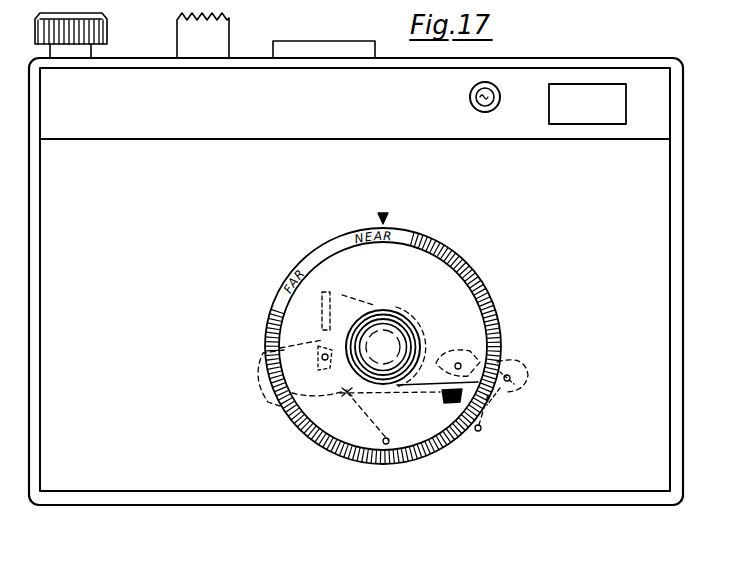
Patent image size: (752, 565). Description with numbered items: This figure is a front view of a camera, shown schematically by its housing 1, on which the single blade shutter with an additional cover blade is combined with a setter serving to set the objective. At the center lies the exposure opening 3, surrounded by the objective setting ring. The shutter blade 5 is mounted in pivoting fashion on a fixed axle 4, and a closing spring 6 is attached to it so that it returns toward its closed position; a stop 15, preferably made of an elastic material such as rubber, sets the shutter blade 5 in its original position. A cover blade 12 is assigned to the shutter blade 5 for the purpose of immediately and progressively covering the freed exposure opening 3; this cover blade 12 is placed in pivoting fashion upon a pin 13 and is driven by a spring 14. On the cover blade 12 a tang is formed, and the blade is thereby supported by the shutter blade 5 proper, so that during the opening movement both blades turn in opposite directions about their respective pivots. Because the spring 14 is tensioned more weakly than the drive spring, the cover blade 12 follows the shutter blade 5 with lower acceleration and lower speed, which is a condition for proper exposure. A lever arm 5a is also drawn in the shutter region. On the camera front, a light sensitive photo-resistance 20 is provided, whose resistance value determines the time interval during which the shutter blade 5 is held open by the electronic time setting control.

The housing 1 is at (611, 485).
The exposure opening 3 is at (395, 343).
The fixed axle 4 is at (322, 363).
The shutter blade 5 is at (362, 307).
The lever arm 5a is at (334, 296).
The closing spring 6 is at (366, 417).
The cover blade 12 is at (447, 352).
The pin 13 is at (510, 385).
The spring 14 is at (492, 402).
The stop 15 is at (450, 398).
The photo-resistance 20 is at (485, 112).